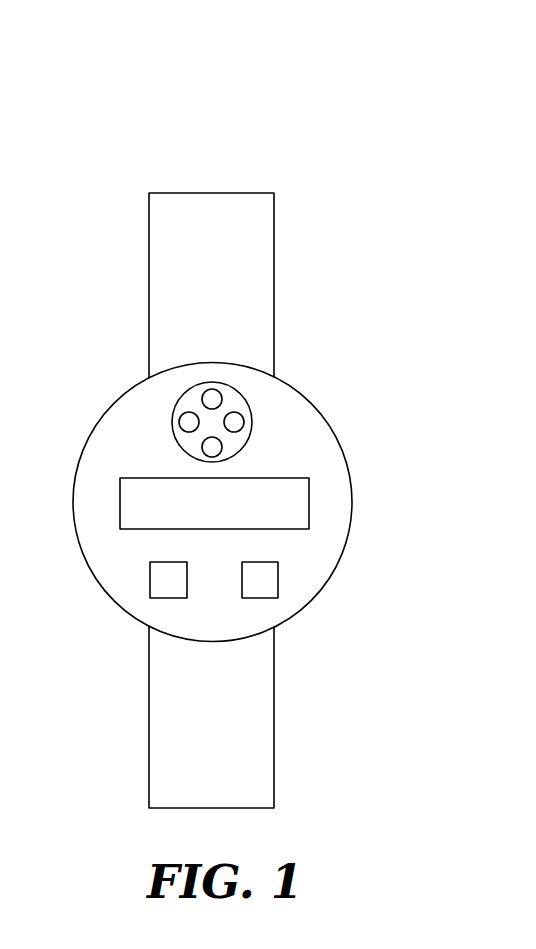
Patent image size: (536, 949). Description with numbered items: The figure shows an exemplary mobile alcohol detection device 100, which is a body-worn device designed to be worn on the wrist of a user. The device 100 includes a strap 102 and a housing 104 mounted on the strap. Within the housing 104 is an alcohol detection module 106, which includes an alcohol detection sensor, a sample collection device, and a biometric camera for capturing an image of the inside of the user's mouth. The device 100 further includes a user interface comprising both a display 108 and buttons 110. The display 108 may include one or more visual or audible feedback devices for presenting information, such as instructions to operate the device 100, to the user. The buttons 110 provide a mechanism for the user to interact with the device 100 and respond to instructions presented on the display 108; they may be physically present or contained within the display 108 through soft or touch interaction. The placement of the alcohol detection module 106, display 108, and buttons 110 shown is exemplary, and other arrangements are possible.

The mobile alcohol detection device 100 is at (300, 108).
The strap 102 is at (242, 280).
The housing 104 is at (123, 438).
The alcohol detection module 106 is at (235, 398).
The display 108 is at (292, 509).
The buttons 110 is at (263, 585).